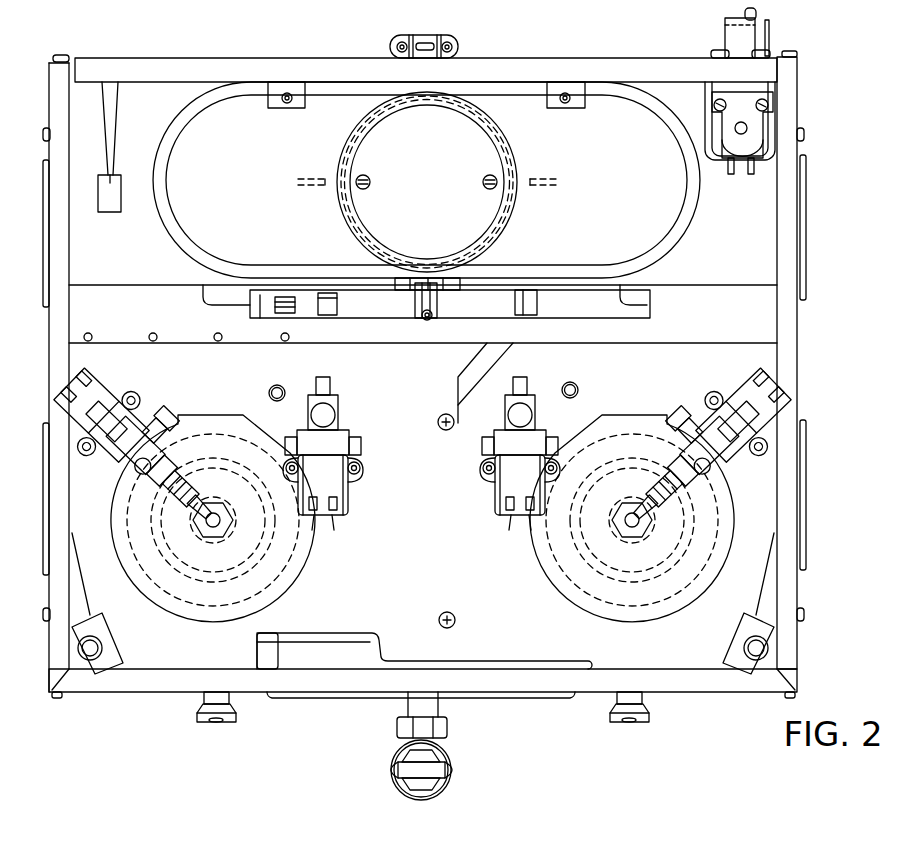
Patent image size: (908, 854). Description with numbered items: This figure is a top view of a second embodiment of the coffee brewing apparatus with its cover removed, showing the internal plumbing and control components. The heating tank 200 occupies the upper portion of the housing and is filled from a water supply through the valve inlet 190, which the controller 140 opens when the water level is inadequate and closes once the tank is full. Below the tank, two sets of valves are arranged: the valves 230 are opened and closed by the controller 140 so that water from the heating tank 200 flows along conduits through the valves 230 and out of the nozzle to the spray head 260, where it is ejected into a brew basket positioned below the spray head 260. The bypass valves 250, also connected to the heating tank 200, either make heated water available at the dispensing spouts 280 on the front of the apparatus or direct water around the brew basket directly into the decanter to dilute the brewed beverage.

The controller 140 is at (370, 646).
The valve inlet 190 is at (737, 164).
The heating tank 200 is at (672, 245).
The valve 230 is at (133, 388).
The bypass valve 250 is at (480, 447).
The spray head 260 is at (216, 512).
The dispensing spout 280 is at (221, 724).